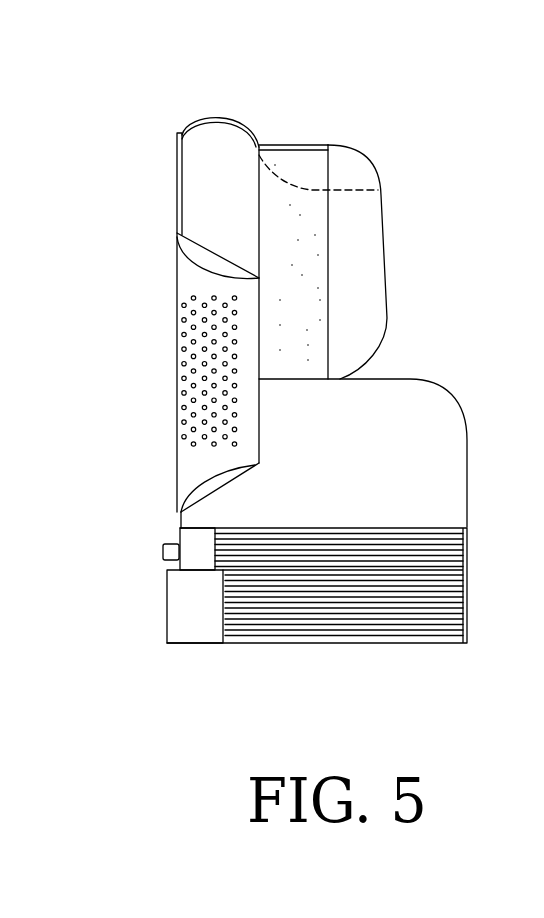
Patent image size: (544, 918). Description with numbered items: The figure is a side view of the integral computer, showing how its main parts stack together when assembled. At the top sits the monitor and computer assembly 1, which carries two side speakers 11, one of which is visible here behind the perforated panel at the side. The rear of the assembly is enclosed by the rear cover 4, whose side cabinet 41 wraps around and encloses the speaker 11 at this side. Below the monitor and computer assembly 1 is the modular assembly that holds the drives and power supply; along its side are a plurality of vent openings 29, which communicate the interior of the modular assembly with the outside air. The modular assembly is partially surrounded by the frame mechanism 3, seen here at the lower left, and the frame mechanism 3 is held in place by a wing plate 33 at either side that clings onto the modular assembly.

The monitor and computer assembly 1 is at (160, 144).
The side speaker 11 is at (185, 272).
The side cabinet 41 is at (293, 178).
The rear cover 4 is at (413, 379).
The frame mechanism 3 is at (272, 648).
The vent opening 29 is at (312, 617).
The wing plate 33 is at (178, 610).